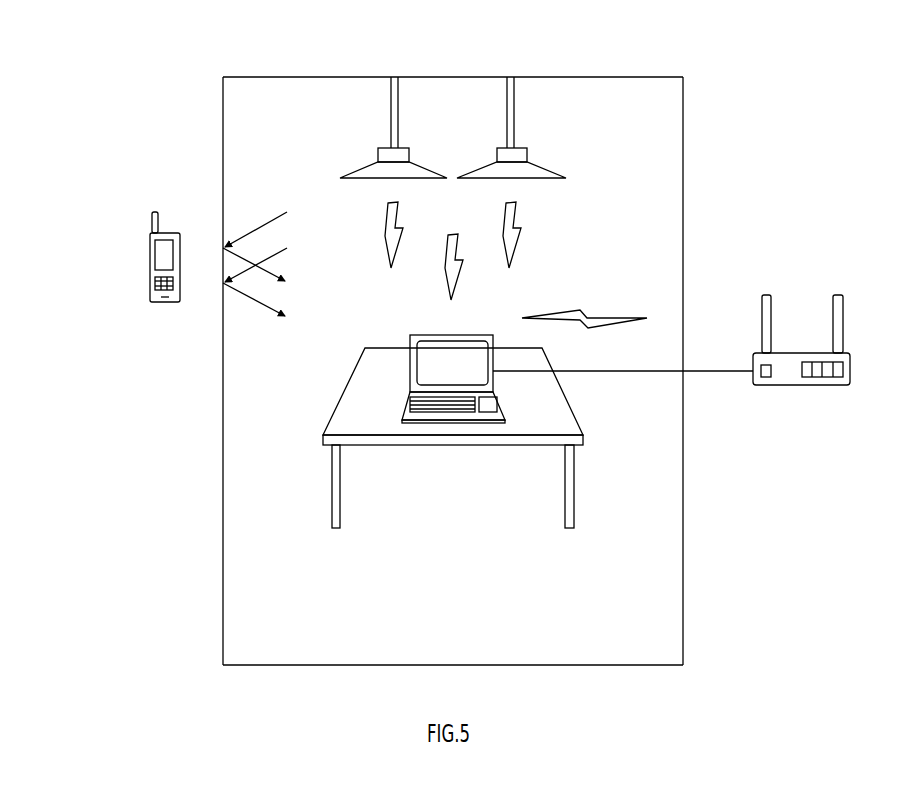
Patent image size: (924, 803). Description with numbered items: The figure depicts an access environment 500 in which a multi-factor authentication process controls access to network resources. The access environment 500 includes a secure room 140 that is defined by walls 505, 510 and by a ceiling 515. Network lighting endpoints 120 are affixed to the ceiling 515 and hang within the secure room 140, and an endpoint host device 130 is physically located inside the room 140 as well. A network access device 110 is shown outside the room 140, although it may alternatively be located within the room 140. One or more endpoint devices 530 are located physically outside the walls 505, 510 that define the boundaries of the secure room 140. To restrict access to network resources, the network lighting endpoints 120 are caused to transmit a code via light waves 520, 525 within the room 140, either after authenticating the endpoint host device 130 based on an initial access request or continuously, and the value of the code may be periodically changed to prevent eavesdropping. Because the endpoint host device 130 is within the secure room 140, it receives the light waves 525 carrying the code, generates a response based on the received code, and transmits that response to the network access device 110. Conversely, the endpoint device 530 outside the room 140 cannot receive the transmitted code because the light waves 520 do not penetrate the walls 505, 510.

The access environment 500 is at (124, 114).
The secure room 140 is at (453, 352).
The wall 505 is at (222, 520).
The wall 510 is at (683, 488).
The ceiling 515 is at (333, 76).
The network lighting endpoints 120 is at (514, 122).
The light waves 525 is at (534, 227).
The endpoint host device 130 is at (449, 331).
The network access device 110 is at (850, 371).
The endpoint device 530 is at (152, 268).
The light waves 520 is at (260, 216).